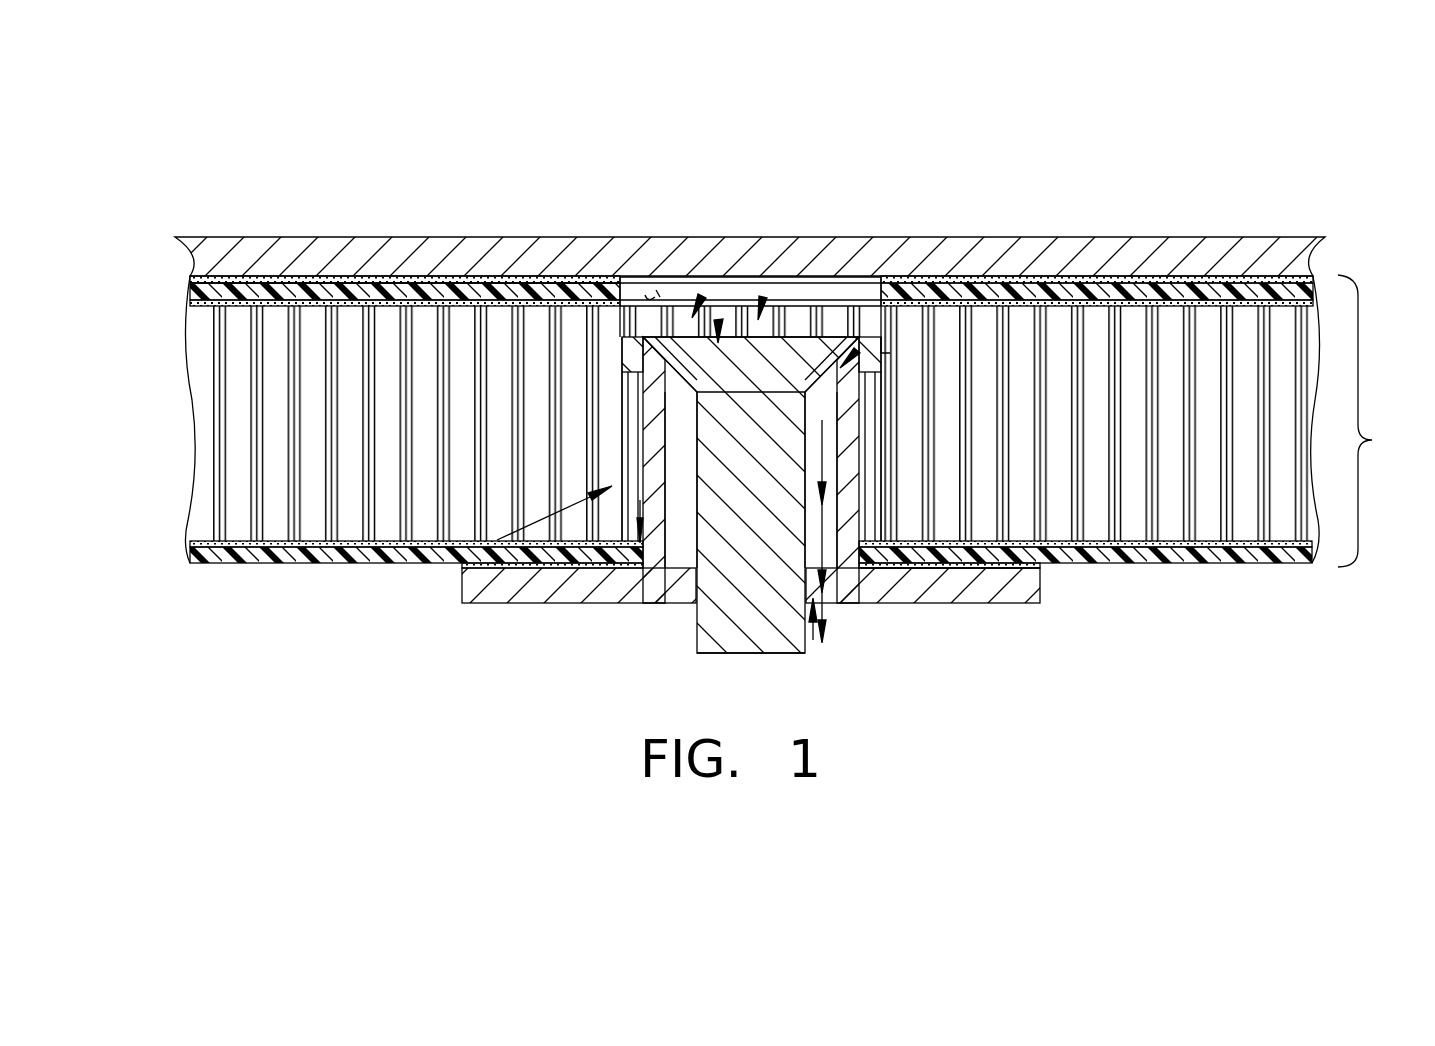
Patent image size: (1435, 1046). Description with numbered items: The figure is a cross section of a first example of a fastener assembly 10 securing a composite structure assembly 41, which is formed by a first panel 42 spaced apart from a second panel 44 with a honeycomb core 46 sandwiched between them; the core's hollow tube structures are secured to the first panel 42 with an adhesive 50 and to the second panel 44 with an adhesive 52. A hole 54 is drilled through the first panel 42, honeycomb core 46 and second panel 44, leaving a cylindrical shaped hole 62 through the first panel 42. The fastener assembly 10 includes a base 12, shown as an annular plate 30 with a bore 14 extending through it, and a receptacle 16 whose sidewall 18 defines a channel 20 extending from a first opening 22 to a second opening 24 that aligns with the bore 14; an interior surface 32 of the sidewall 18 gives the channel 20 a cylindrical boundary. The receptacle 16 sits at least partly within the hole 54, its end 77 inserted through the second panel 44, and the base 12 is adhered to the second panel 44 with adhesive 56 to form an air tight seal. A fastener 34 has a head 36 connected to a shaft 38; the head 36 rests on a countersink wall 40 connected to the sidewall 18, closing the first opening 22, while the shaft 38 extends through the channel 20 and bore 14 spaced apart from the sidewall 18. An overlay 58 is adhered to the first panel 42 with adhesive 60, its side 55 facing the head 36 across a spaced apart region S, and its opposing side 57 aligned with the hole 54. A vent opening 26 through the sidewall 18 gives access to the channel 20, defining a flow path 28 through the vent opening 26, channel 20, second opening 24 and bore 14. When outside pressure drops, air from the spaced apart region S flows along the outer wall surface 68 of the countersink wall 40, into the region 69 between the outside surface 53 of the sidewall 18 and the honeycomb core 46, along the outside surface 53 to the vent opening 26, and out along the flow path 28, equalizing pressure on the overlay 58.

The fastener assembly 10 is at (763, 297).
The base 12 is at (985, 603).
The bore 14 is at (810, 627).
The receptacle 16 is at (676, 478).
The sidewall 18 is at (653, 425).
The channel 20 is at (857, 351).
The first opening 22 is at (665, 365).
The second opening 24 is at (838, 603).
The vent opening 26 is at (848, 412).
The flow path 28 is at (818, 525).
The annular plate 30 is at (560, 605).
The interior surface 32 is at (680, 568).
The fastener 34 is at (702, 296).
The head 36 is at (845, 340).
The shaft 38 is at (753, 625).
The countersink wall 40 is at (620, 330).
The composite structure assembly 41 is at (1385, 421).
The first panel 42 is at (195, 290).
The second panel 44 is at (248, 552).
The honeycomb core 46 is at (206, 423).
The adhesive 50 is at (195, 305).
The adhesive 52 is at (195, 543).
The outside surface 53 is at (643, 457).
The hole 54 is at (470, 565).
The side 55 is at (660, 297).
The adhesive 56 is at (1040, 580).
The opposing side 57 is at (500, 240).
The overlay 58 is at (358, 292).
The adhesive 60 is at (350, 278).
The cylindrical shaped hole 62 is at (645, 295).
The outer wall surface 68 is at (886, 353).
The region 69 is at (643, 608).
The end 77 is at (622, 390).
The spaced apart region S is at (719, 320).